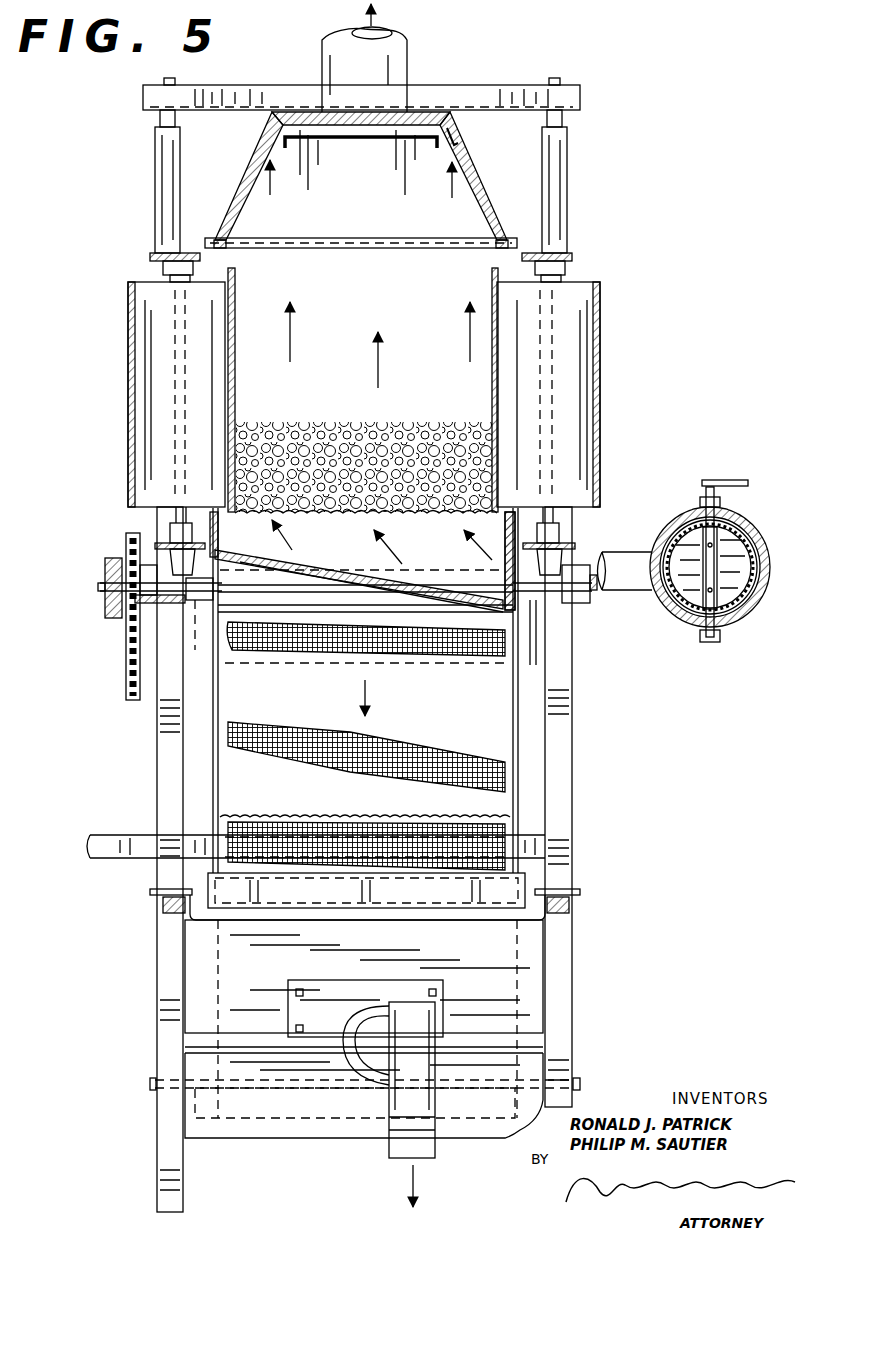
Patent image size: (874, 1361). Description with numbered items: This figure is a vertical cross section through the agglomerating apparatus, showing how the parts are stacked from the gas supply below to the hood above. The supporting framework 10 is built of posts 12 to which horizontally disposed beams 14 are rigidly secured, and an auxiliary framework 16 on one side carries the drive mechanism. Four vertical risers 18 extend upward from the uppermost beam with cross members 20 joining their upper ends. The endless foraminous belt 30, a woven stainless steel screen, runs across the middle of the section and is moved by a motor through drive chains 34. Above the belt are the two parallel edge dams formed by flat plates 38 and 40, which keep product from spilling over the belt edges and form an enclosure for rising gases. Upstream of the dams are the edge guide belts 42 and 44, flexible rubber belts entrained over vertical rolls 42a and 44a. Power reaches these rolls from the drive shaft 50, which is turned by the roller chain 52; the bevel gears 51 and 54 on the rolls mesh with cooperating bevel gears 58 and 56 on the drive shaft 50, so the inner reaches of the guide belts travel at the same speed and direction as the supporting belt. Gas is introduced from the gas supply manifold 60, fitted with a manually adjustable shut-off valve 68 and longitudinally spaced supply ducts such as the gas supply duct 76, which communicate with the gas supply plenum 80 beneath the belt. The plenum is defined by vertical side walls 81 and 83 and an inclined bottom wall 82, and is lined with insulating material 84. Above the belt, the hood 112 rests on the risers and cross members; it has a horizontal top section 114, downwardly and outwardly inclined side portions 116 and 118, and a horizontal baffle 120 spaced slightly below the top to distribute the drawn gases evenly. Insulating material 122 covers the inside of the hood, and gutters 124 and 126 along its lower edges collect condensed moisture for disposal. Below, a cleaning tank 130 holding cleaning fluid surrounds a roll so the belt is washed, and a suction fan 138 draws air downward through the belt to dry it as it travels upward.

The supporting framework 10 is at (575, 775).
The posts 12 is at (556, 1031).
The beams 14 is at (160, 623).
The auxiliary framework 16 is at (118, 838).
The risers 18 is at (155, 193).
The cross members 20 is at (143, 98).
The endless foraminous supporting belt 30 is at (332, 711).
The drive chains 34 is at (126, 684).
The edge dam plate 38 is at (237, 386).
The edge dam plate 40 is at (492, 378).
The edge guide belt 42 is at (128, 337).
The roll 42a is at (158, 387).
The edge guide belt 44 is at (600, 322).
The roll 44a is at (577, 386).
The drive shaft 50 is at (589, 594).
The bevel gear 51 is at (168, 558).
The roller chain 52 is at (105, 573).
The bevel gear 54 is at (557, 556).
The bevel gear 56 is at (533, 660).
The bevel gear 58 is at (196, 602).
The gas supply manifold 60 is at (745, 522).
The shut-off valve 68 is at (742, 583).
The gas supply duct 76 is at (645, 550).
The gas supply plenum 80 is at (347, 544).
The side wall 81 is at (166, 528).
The inclined bottom wall 82 is at (258, 556).
The side wall 83 is at (503, 560).
The insulating material 84 is at (430, 575).
The hood 112 is at (236, 156).
The top section 114 is at (352, 100).
The side portion 116 is at (229, 212).
The side portion 118 is at (470, 167).
The baffle 120 is at (388, 140).
The insulating material 122 is at (452, 148).
The gutter 124 is at (232, 248).
The gutter 126 is at (490, 248).
The cleaning tank 130 is at (208, 1100).
The suction fan 138 is at (398, 1095).